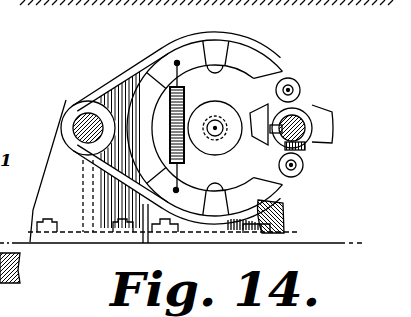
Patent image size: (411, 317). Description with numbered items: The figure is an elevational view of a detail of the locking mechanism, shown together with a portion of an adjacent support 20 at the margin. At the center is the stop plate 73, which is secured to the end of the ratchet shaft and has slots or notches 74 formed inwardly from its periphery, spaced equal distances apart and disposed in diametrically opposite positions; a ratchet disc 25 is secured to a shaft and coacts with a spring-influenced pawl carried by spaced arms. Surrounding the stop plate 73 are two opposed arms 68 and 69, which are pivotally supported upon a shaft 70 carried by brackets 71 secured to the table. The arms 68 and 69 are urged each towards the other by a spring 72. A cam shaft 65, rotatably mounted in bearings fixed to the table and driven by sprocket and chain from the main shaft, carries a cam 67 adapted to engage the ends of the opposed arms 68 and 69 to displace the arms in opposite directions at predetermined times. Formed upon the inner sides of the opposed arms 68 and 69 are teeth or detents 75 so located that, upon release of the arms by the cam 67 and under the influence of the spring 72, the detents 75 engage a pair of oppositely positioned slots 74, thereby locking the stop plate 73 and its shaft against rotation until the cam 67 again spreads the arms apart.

The support base 20 is at (12, 231).
The ratchet disc 25 is at (291, 74).
The cam shaft 65 is at (306, 153).
The cam 67 is at (323, 123).
The opposed arm 68 is at (183, 50).
The opposed arm 69 is at (196, 205).
The shaft 70 is at (72, 106).
The bracket 71 is at (63, 158).
The spring 72 is at (131, 78).
The stop plate 73 is at (215, 128).
The slot 74 is at (262, 72).
The detent 75 is at (216, 60).